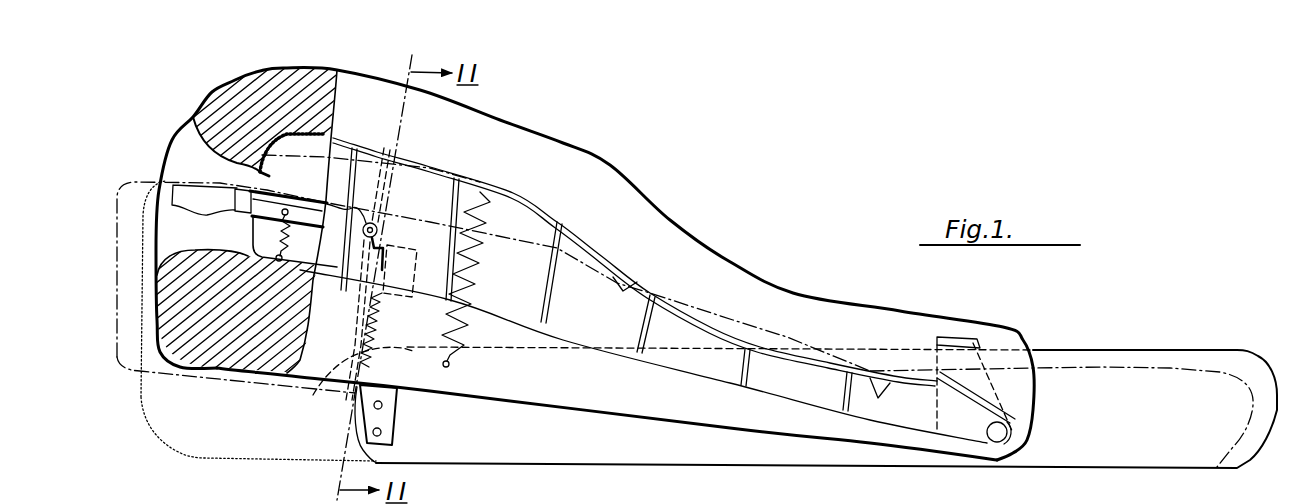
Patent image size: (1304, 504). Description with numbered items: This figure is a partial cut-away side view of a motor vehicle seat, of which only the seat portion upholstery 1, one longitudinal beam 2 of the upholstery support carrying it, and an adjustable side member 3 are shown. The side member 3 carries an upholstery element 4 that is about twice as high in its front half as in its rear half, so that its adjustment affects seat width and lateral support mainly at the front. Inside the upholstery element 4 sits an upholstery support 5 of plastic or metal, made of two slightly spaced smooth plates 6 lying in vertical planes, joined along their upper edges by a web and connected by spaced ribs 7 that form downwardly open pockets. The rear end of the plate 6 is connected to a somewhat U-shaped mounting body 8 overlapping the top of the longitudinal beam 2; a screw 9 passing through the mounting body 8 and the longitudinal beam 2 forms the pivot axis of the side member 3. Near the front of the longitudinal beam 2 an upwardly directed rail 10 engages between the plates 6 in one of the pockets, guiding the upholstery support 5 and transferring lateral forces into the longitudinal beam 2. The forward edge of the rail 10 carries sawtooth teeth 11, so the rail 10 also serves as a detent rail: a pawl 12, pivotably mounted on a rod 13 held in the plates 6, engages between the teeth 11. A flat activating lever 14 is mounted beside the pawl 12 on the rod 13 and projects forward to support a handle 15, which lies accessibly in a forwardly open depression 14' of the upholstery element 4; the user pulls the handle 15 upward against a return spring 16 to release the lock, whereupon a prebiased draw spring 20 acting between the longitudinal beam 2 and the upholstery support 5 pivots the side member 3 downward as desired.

The seat portion upholstery 1 is at (1100, 367).
The longitudinal beam 2 is at (1160, 358).
The side member 3 is at (676, 216).
The upholstery element 4 is at (603, 174).
The upholstery support 5 is at (516, 191).
The plates 6 is at (318, 190).
The ribs 7 is at (637, 316).
The mounting body 8 is at (958, 338).
The screw 9 is at (1013, 438).
The rail 10 is at (386, 427).
The teeth 11 is at (381, 318).
The pawl 12 is at (364, 263).
The rod 13 is at (384, 226).
The activating lever 14 is at (308, 190).
The depression 14' is at (230, 131).
The handle 15 is at (173, 185).
The return spring 16 is at (252, 252).
The draw spring 20 is at (481, 283).